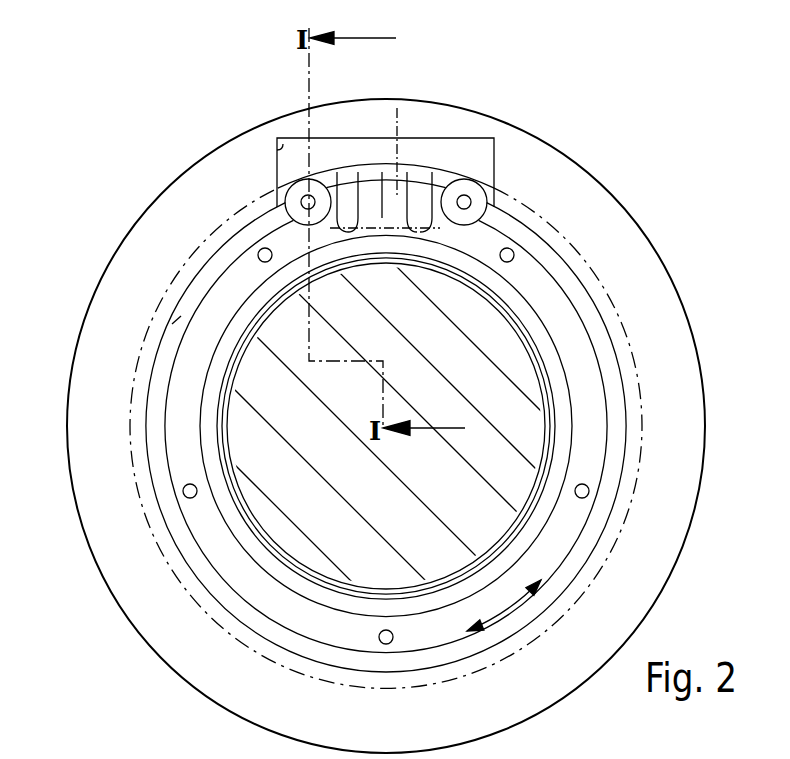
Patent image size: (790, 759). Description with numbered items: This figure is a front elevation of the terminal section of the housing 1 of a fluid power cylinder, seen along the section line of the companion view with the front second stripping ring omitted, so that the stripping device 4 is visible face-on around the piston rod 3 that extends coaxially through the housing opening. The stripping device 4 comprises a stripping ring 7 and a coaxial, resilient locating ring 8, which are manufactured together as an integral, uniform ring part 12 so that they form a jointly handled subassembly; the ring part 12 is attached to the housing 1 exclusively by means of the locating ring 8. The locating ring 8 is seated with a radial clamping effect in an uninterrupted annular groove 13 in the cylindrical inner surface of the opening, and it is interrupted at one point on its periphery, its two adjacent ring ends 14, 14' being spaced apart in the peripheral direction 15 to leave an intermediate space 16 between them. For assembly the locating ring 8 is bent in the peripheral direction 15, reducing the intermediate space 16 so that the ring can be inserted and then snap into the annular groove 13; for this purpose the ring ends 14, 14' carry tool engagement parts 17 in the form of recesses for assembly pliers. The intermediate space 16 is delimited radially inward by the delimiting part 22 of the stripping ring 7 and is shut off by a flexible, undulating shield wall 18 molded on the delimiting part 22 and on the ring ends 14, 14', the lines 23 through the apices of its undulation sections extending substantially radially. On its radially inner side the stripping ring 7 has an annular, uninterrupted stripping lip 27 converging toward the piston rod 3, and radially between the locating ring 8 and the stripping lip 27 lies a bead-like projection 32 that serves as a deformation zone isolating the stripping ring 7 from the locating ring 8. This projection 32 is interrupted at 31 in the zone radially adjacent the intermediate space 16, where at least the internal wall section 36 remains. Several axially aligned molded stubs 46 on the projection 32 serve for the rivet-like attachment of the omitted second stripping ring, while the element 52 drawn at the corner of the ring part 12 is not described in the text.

The housing 1 is at (638, 262).
The piston rod 3 is at (512, 400).
The stripping device 4 is at (630, 328).
The stripping ring 7 is at (236, 314).
The locating ring 8 is at (176, 320).
The ring part 12 is at (512, 290).
The annular groove 13 is at (132, 390).
The ring end 14 is at (297, 130).
The ring end 14' is at (461, 130).
The peripheral direction 15 is at (513, 600).
The intermediate space 16 is at (351, 176).
The tool engagement parts 17 is at (306, 201).
The shield wall 18 is at (416, 176).
The delimiting part 22 is at (385, 250).
The lines through undulation apices 23 is at (336, 250).
The stripping lip 27 is at (540, 512).
The interruption 31 is at (371, 180).
The bead-like projection 32 is at (590, 440).
The internal wall section 36 is at (396, 108).
The molded stubs 46 is at (262, 251).
The corner recess 52 is at (279, 141).